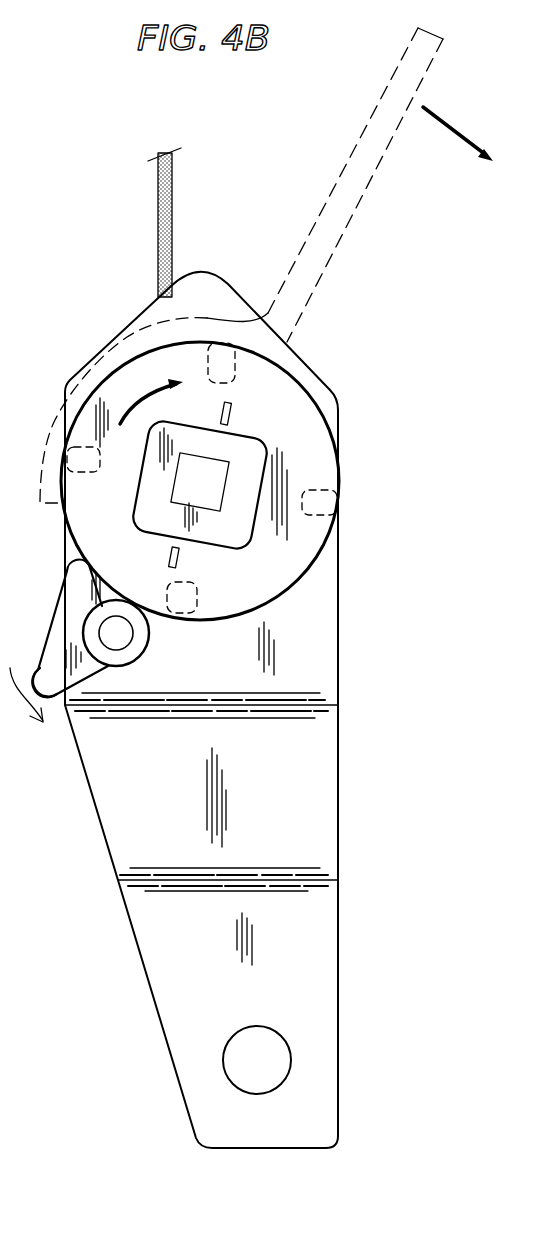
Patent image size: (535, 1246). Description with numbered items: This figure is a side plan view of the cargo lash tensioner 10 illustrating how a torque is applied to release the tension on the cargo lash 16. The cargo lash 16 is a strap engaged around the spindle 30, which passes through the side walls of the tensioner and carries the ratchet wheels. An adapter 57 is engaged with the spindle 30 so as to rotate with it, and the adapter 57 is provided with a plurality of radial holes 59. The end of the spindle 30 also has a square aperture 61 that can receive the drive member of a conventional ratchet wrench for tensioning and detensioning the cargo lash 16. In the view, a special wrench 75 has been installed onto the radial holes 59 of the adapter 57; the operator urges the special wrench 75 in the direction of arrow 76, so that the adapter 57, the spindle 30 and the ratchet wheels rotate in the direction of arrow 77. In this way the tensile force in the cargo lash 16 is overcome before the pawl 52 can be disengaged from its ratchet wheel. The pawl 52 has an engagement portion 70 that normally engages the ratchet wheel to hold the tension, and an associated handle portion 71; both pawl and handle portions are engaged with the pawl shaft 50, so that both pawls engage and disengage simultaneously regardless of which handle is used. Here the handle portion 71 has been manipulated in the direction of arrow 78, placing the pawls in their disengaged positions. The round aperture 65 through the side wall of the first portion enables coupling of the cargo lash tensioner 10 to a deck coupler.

The cargo lash tensioner 10 is at (396, 341).
The cargo lash 16 is at (158, 216).
The spindle 30 is at (145, 490).
The pawl shaft 50 is at (122, 637).
The pawl 52 is at (123, 610).
The adapter 57 is at (271, 574).
The radial holes 59 is at (340, 508).
The square aperture 61 is at (207, 473).
The aperture 65 is at (270, 1043).
The engagement portion 70 is at (85, 592).
The handle portion 71 is at (60, 667).
The special wrench 75 is at (310, 232).
The arrow 76 is at (465, 141).
The arrow 77 is at (136, 412).
The arrow 78 is at (25, 716).